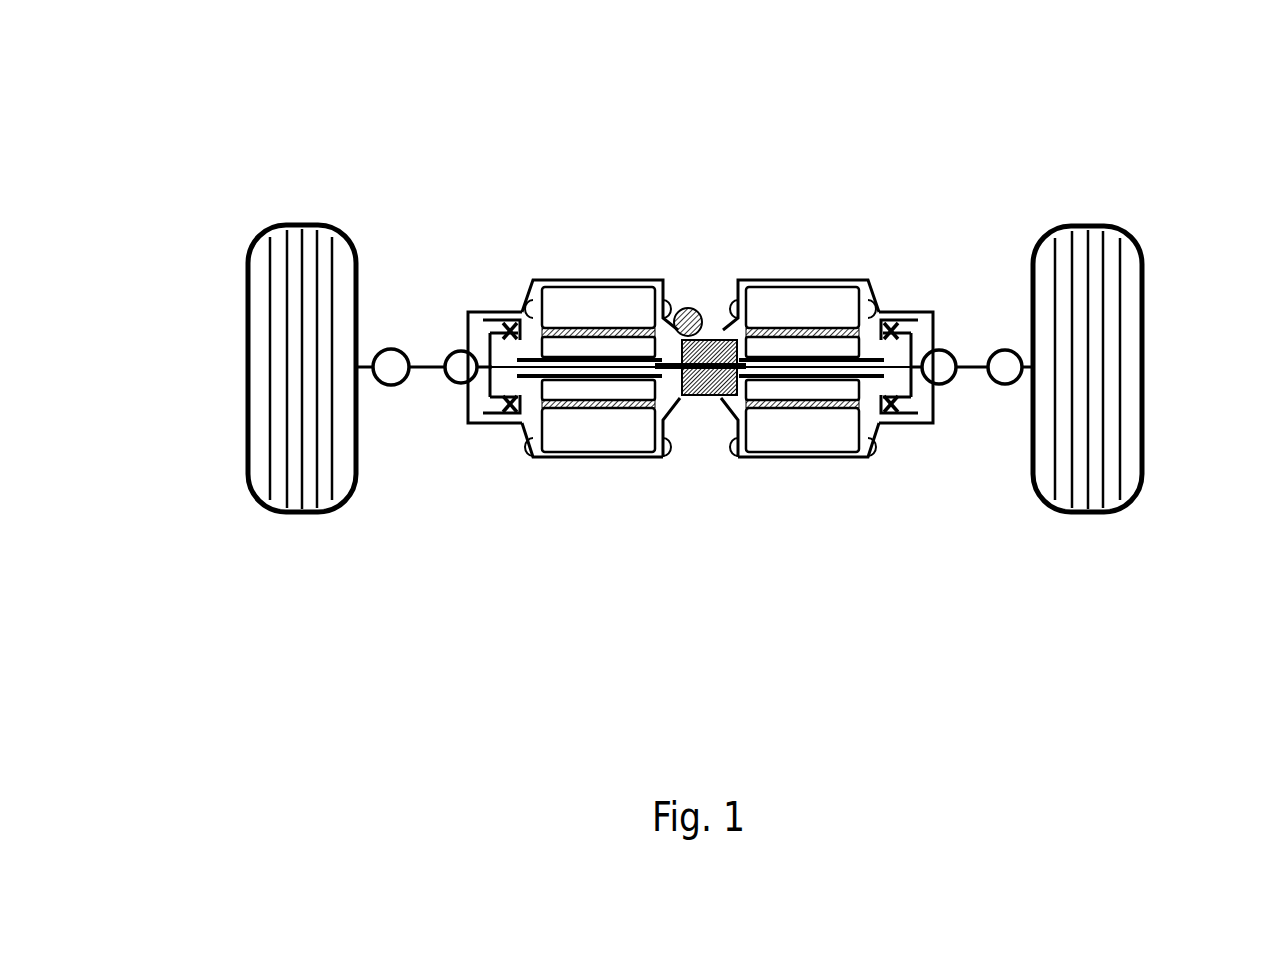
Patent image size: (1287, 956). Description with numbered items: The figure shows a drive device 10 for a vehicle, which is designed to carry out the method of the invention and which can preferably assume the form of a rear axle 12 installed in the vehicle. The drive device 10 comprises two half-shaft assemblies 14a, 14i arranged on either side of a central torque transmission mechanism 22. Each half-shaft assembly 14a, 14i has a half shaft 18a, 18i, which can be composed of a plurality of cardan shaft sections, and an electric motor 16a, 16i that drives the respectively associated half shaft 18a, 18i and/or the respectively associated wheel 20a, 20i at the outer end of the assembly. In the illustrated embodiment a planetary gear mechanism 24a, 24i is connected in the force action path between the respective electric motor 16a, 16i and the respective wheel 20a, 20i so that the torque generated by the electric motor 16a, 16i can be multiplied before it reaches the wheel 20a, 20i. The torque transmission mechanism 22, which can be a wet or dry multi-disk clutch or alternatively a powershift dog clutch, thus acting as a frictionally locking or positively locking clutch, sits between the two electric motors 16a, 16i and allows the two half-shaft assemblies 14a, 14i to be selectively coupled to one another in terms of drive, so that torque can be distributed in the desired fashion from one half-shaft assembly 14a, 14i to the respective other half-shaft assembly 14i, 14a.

The drive device 10 is at (543, 636).
The rear axle 12 is at (720, 162).
The half-shaft assembly 14a is at (410, 463).
The half-shaft assembly 14i is at (948, 462).
The electric motor 16a is at (607, 279).
The electric motor 16i is at (810, 279).
The half shaft 18a is at (427, 370).
The half shaft 18i is at (974, 372).
The wheel 20a is at (288, 228).
The wheel 20i is at (1103, 224).
The torque transmission mechanism 22 is at (707, 396).
The planetary gear mechanism 24a is at (490, 317).
The planetary gear mechanism 24i is at (906, 321).